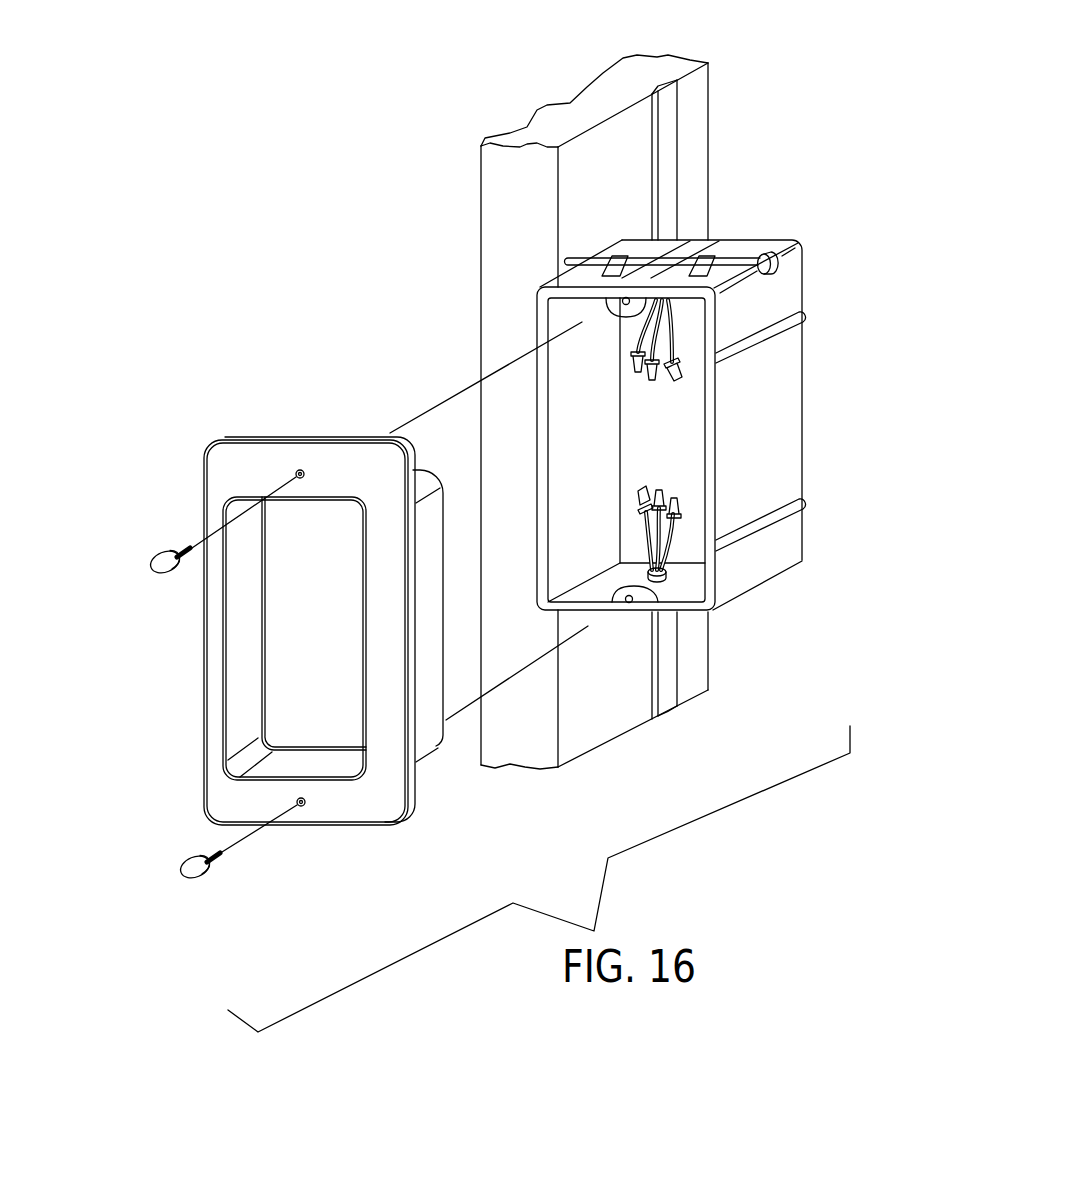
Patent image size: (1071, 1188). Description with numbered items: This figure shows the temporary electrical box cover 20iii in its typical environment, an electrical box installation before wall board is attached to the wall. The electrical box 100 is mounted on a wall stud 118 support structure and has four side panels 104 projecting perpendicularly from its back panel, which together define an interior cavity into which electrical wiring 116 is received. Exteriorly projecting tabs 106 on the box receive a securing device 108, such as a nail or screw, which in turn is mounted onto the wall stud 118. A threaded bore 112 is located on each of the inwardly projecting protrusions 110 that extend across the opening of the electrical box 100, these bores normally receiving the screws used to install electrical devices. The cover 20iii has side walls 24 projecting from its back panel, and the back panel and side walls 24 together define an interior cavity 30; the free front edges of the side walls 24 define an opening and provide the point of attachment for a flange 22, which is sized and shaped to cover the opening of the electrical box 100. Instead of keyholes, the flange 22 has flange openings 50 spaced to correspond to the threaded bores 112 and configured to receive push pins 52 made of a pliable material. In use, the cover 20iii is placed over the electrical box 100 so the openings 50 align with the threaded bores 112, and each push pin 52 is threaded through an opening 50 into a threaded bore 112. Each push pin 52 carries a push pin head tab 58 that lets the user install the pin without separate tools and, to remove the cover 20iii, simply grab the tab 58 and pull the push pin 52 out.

The electrical box cover 20iii is at (241, 659).
The flange 22 is at (218, 778).
The side walls/panels 24 is at (235, 710).
The interior cavity 30 is at (333, 528).
The flange openings 50 is at (298, 468).
The push pins 52 is at (177, 718).
The push pin head tab 58 is at (165, 650).
The electrical box 100 is at (665, 384).
The side panels 104 is at (567, 437).
The exteriorly projecting tabs 106 is at (712, 263).
The securing device 108 is at (770, 265).
The inwardly projecting protrusions 110 is at (540, 306).
The threaded bore 112 is at (603, 260).
The electrical wiring 116 is at (683, 507).
The wall stud 118 is at (495, 188).